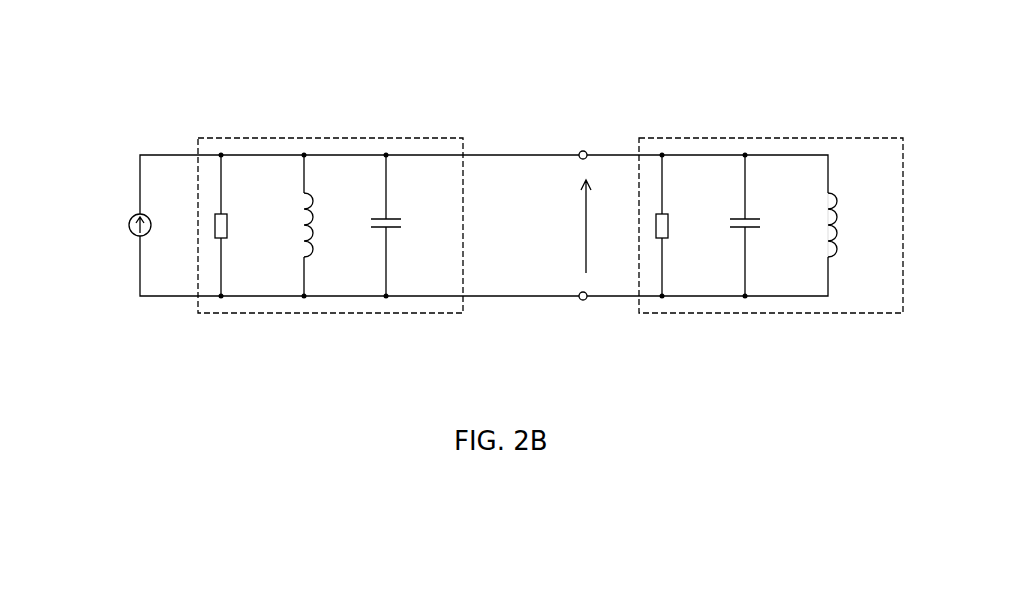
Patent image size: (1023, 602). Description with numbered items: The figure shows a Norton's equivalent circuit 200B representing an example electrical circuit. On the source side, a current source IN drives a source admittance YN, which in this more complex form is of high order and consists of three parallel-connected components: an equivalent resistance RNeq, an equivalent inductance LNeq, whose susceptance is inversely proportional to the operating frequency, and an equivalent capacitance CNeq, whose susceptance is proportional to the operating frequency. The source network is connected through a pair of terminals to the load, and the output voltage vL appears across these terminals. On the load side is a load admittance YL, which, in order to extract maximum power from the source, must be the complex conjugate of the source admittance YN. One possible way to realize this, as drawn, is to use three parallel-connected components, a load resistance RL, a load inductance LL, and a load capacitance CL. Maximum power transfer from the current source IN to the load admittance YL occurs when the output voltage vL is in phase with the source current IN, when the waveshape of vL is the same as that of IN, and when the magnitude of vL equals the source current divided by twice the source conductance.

The Norton's equivalent circuit 200B is at (541, 161).
The source current IN is at (127, 225).
The source admittance YN is at (330, 209).
The equivalent resistance RNeq is at (241, 225).
The equivalent inductance LNeq is at (326, 225).
The equivalent capacitance CNeq is at (404, 225).
The output voltage vL is at (596, 226).
The load admittance YL is at (771, 209).
The load resistance RL is at (675, 225).
The load capacitance CL is at (758, 225).
The load inductance LL is at (842, 225).